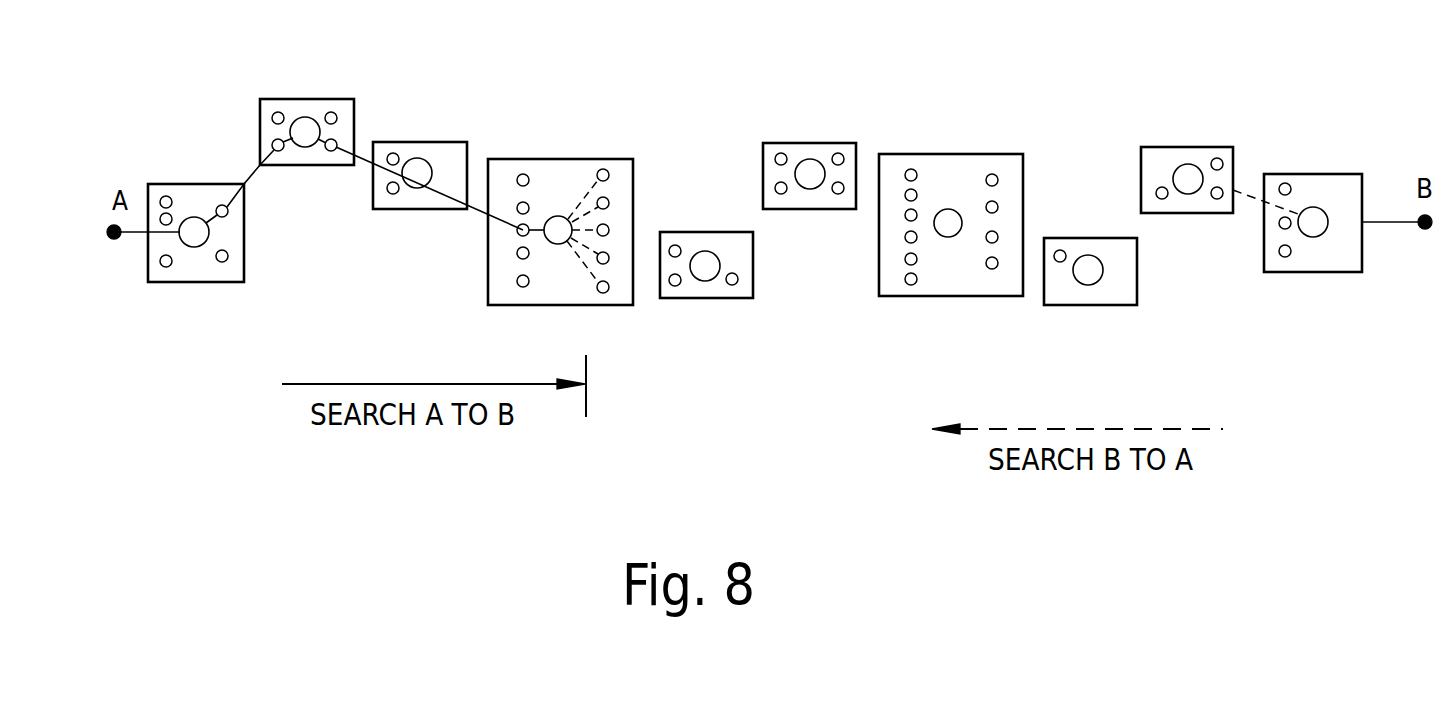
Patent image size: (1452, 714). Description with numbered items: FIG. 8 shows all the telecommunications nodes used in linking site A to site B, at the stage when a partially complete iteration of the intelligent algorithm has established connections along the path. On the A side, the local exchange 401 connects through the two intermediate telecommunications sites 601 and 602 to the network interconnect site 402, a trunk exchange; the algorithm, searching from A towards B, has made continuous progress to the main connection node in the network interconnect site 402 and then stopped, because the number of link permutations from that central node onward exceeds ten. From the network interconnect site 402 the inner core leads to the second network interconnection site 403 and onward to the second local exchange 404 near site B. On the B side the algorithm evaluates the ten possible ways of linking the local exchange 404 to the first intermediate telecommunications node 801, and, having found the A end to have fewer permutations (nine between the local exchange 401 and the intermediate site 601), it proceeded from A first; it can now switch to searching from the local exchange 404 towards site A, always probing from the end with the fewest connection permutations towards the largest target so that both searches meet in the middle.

The local exchange 401 is at (193, 198).
The intermediate telecommunications site 601 is at (300, 110).
The intermediate telecommunications site 602 is at (414, 150).
The network interconnect site 402 is at (552, 172).
The second network interconnection site 403 is at (948, 167).
The intermediate telecommunications node 801 is at (1172, 157).
The second local exchange 404 is at (1315, 192).